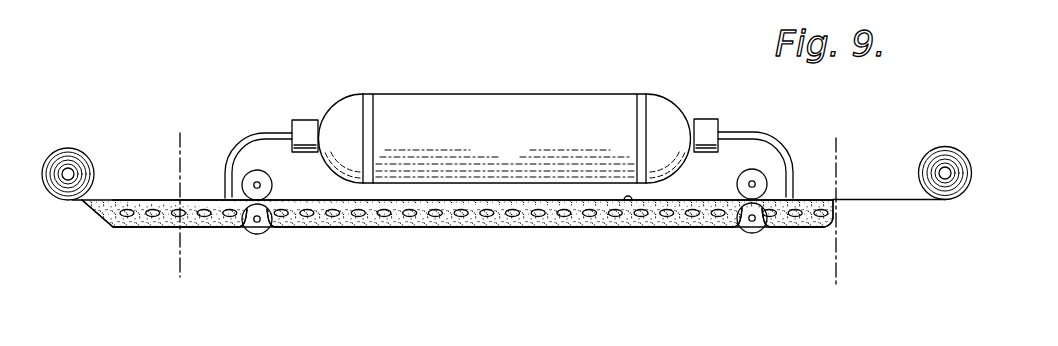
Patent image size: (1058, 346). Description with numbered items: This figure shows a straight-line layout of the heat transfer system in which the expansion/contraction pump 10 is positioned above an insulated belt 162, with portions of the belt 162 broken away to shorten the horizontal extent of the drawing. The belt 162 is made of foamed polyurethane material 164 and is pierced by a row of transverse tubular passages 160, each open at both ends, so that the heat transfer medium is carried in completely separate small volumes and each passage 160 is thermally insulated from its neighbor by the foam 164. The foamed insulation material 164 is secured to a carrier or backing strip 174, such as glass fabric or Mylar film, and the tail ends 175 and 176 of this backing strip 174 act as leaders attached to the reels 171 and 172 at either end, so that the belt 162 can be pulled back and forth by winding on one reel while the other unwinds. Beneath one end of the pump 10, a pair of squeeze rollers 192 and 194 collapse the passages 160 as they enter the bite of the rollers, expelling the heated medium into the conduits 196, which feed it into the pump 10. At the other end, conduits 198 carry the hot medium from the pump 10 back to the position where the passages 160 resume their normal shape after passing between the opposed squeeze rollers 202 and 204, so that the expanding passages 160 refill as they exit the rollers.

The pump 10 is at (549, 78).
The tubular passage 160 is at (521, 214).
The insulated belt 162 is at (463, 231).
The foamed polyurethane material 164 is at (393, 223).
The reel 171 is at (68, 152).
The reel 172 is at (938, 146).
The backing strip 174 is at (623, 201).
The tail end 175 is at (82, 202).
The tail end 176 is at (910, 201).
The squeeze roller 192 is at (268, 177).
The squeeze roller 194 is at (263, 233).
The conduit 196 is at (231, 151).
The conduit 198 is at (777, 140).
The squeeze roller 202 is at (747, 170).
The squeeze roller 204 is at (753, 233).